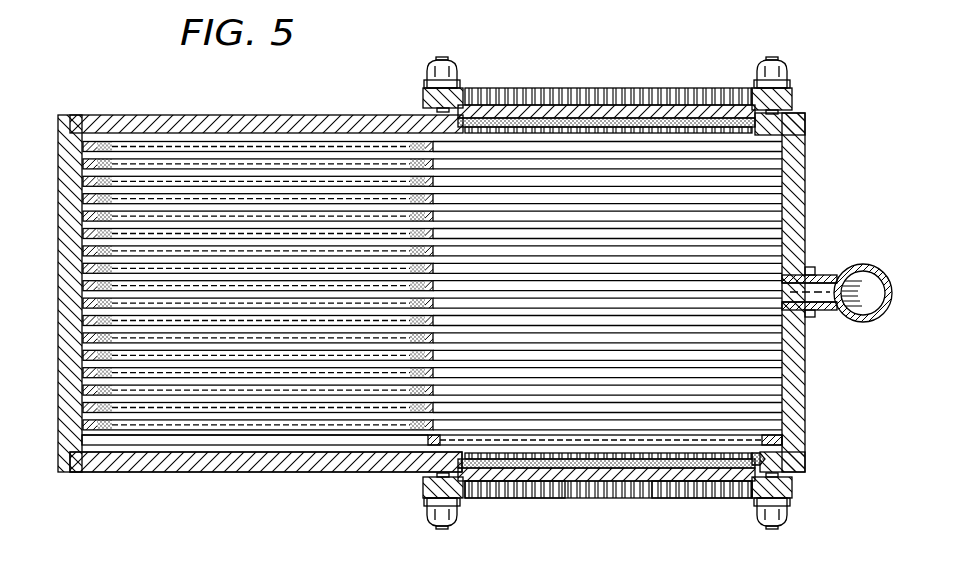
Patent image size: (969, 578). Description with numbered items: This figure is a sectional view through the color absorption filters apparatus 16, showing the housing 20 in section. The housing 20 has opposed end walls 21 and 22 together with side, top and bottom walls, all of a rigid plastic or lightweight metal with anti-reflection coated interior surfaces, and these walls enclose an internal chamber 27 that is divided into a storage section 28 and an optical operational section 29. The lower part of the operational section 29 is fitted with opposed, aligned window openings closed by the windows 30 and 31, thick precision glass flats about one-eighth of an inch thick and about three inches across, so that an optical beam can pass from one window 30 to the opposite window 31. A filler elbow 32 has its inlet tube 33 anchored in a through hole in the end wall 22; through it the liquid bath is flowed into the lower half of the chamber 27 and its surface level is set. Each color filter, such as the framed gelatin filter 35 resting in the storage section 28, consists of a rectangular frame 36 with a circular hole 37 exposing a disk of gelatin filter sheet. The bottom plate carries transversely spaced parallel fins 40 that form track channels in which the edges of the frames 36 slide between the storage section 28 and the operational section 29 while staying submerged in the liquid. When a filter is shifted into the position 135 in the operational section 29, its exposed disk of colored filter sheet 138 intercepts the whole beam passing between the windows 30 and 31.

The color absorption filters apparatus 16 is at (414, 103).
The housing 20 is at (357, 474).
The end wall 21 is at (57, 128).
The end wall 22 is at (806, 352).
The internal chamber 27 is at (270, 141).
The storage section 28 is at (209, 454).
The optical operational section 29 is at (735, 435).
The window 30 is at (560, 89).
The window 31 is at (622, 470).
The filler elbow 32 is at (860, 262).
The inlet tube 33 is at (822, 276).
The framed gelatin filter 35 is at (323, 431).
The rectangular frame 36 is at (784, 440).
The circular hole 37 is at (763, 456).
The fins 40 is at (137, 435).
The filter position in operational section 135 is at (520, 446).
The exposed disk of colored filter sheet 138 is at (705, 441).